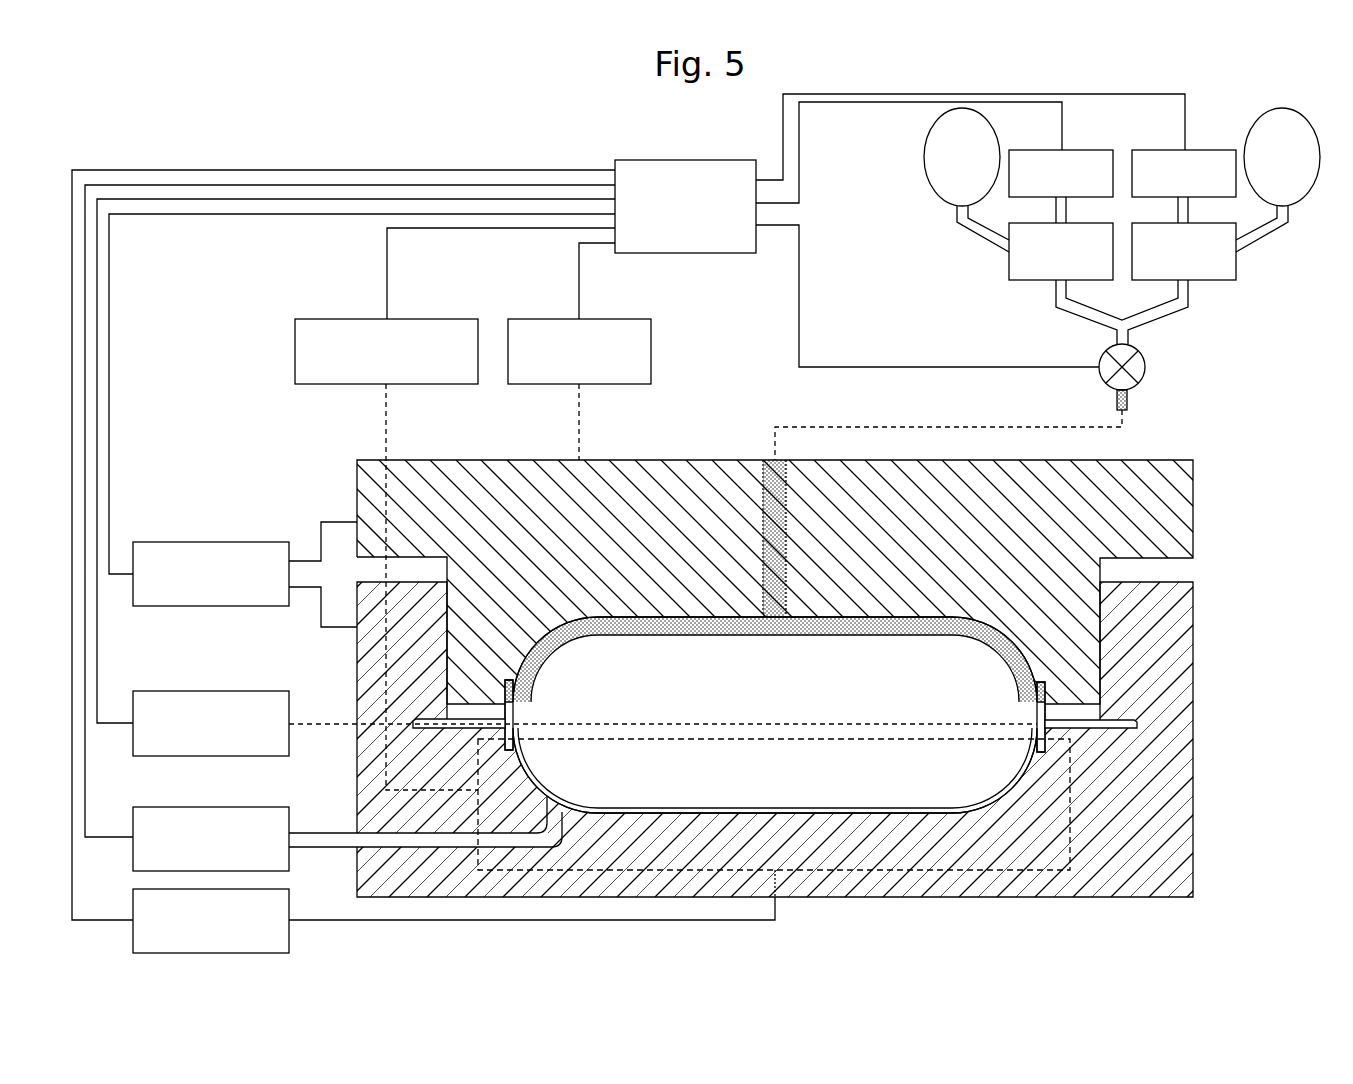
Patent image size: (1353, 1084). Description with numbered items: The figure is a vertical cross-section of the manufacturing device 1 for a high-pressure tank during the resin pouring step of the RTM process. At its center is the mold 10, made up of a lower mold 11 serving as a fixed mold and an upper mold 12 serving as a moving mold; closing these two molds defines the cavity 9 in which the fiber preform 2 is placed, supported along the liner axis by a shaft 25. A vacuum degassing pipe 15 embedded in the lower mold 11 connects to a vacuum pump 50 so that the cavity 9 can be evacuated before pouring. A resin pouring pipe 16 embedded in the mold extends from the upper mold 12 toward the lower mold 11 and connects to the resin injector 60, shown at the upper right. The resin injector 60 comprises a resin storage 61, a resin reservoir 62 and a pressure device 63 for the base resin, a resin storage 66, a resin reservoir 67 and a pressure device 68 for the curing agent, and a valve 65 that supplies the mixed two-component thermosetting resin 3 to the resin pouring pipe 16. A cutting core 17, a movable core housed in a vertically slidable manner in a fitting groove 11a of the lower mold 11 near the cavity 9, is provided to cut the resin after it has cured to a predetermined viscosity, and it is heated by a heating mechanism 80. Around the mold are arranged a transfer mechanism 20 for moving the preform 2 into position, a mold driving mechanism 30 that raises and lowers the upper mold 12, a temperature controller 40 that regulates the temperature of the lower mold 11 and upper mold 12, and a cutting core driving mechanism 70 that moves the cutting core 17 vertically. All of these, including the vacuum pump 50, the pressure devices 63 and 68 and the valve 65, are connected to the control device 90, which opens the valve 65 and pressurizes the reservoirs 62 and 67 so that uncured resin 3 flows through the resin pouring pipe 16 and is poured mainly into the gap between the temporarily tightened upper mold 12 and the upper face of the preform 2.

The manufacturing device 1 is at (237, 163).
The preform 2 is at (983, 777).
The resin 3 is at (790, 553).
The cavity 9 is at (905, 803).
The mold 10 is at (700, 653).
The lower mold 11 is at (1177, 647).
The fitting groove 11a is at (1070, 740).
The upper mold 12 is at (738, 557).
The vacuum degassing pipe 15 is at (432, 838).
The resin pouring pipe 16 is at (758, 478).
The cutting core 17 is at (1055, 820).
The transfer mechanism 20 is at (192, 691).
The shaft 25 is at (1118, 718).
The mold driving mechanism 30 is at (553, 319).
The temperature controller 40 is at (192, 542).
The vacuum pump 50 is at (192, 807).
The resin injector 60 is at (1043, 252).
The resin storage 61 is at (940, 200).
The resin reservoir 62 is at (1030, 283).
The pressure device 63 is at (1090, 149).
The valve 65 is at (1146, 366).
The resin storage 66 is at (1305, 200).
The resin reservoir 67 is at (1215, 283).
The pressure device 68 is at (1213, 149).
The cutting core driving mechanism 70 is at (347, 319).
The heating mechanism 80 is at (133, 900).
The control device 90 is at (641, 160).